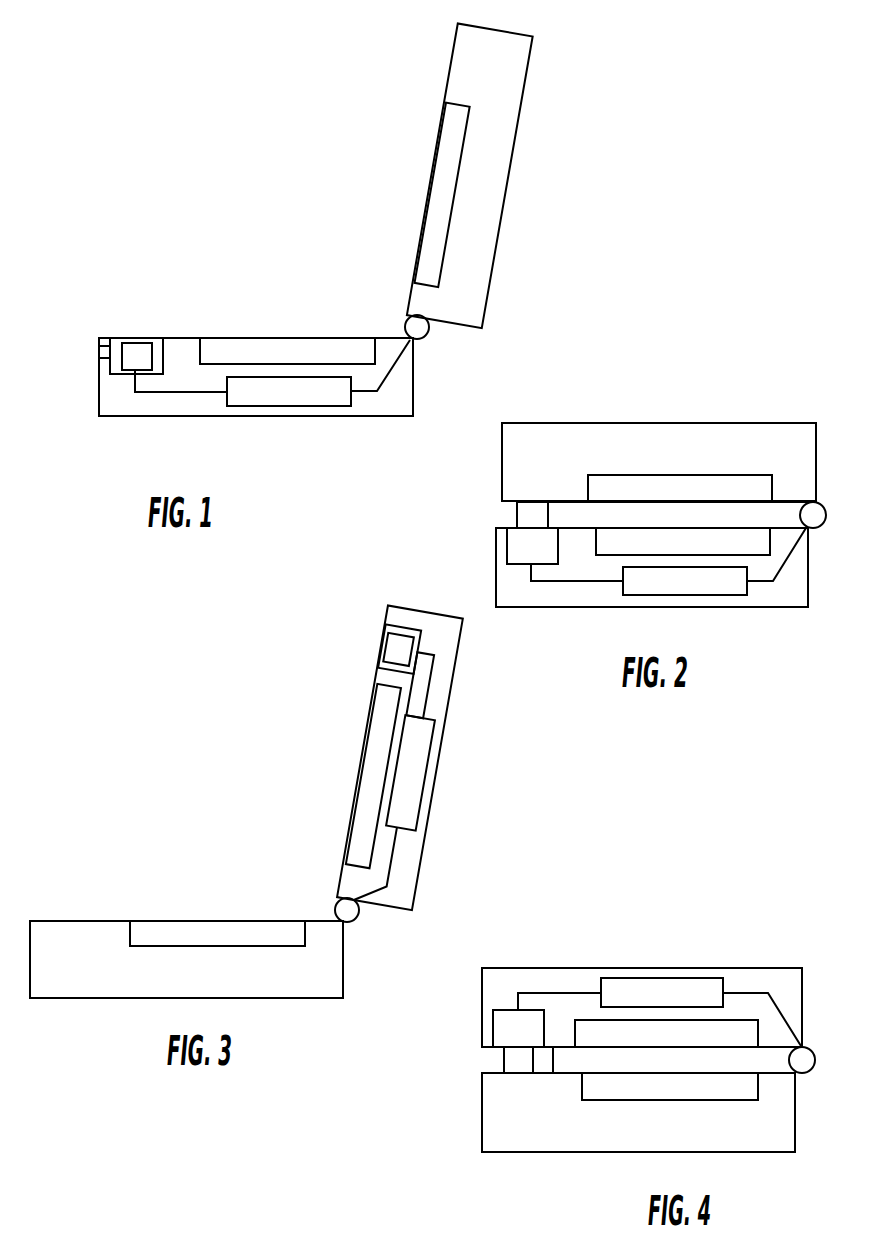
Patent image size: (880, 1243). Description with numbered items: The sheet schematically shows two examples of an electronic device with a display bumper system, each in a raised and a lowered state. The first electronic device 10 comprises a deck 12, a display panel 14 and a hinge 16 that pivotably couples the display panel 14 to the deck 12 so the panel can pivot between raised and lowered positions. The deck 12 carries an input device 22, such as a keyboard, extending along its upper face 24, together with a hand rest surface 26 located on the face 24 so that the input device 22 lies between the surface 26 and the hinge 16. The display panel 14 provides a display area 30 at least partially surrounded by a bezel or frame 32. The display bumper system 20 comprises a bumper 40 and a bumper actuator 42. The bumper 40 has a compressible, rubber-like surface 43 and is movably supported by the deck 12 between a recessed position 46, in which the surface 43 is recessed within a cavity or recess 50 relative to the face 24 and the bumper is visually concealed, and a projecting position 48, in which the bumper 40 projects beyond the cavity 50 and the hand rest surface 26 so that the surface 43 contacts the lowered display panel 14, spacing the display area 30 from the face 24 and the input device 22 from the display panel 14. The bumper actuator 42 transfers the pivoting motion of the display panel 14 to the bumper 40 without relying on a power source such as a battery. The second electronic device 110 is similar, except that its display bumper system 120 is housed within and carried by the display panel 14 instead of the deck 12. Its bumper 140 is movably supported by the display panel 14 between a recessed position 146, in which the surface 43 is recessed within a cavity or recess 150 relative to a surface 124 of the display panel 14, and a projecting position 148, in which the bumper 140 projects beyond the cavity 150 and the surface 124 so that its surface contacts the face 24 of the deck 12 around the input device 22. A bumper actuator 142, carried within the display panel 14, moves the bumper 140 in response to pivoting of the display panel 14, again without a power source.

In FIG. 1, the electronic device 10 is at (152, 192).
In FIG. 2, the electronic device 10 is at (525, 380).
In FIG. 1, the deck 12 is at (122, 420).
In FIG. 2, the deck 12 is at (778, 610).
In FIG. 3, the deck 12 is at (117, 1003).
In FIG. 4, the deck 12 is at (541, 1155).
In FIG. 1, the display panel 14 is at (513, 170).
In FIG. 2, the display panel 14 is at (597, 435).
In FIG. 3, the display panel 14 is at (448, 717).
In FIG. 4, the display panel 14 is at (720, 972).
In FIG. 1, the hinge 16 is at (429, 336).
In FIG. 2, the hinge 16 is at (827, 510).
In FIG. 3, the hinge 16 is at (358, 918).
In FIG. 4, the hinge 16 is at (817, 1056).
In FIG. 1, the display bumper system 20 is at (255, 409).
In FIG. 1, the input device 22 is at (258, 352).
In FIG. 2, the input device 22 is at (703, 532).
In FIG. 3, the input device 22 is at (258, 930).
In FIG. 4, the input device 22 is at (708, 1101).
In FIG. 1, the upper face of deck 24 is at (182, 338).
In FIG. 2, the upper face of deck 24 is at (582, 529).
In FIG. 3, the upper face of deck 24 is at (90, 920).
In FIG. 4, the upper face of deck 24 is at (483, 1071).
In FIG. 1, the hand rest surface 26 is at (158, 338).
In FIG. 2, the hand rest surface 26 is at (572, 529).
In FIG. 1, the display area 30 is at (428, 167).
In FIG. 2, the display area 30 is at (633, 487).
In FIG. 3, the display area 30 is at (347, 837).
In FIG. 4, the display area 30 is at (628, 1028).
In FIG. 1, the bezel or frame 32 is at (448, 77).
In FIG. 2, the bezel or frame 32 is at (510, 500).
In FIG. 1, the bumper 40 is at (118, 358).
In FIG. 2, the bumper 40 is at (517, 515).
In FIG. 1, the bumper actuator 42 is at (143, 338).
In FIG. 2, the bumper actuator 42 is at (713, 596).
In FIG. 2, the surface 43 is at (541, 500).
In FIG. 3, the surface 43 is at (383, 645).
In FIG. 4, the surface 43 is at (508, 1074).
In FIG. 1, the recessed position 46 is at (90, 329).
In FIG. 2, the projecting position 48 is at (473, 517).
In FIG. 1, the cavity or recess 50 is at (105, 347).
In FIG. 2, the cavity or recess 50 is at (507, 537).
In FIG. 3, the electronic device 110 is at (120, 777).
In FIG. 3, the display bumper system 120 is at (434, 778).
In FIG. 4, the display bumper system 120 is at (685, 972).
In FIG. 3, the surface of display panel 124 is at (377, 680).
In FIG. 4, the surface of display panel 124 is at (552, 1055).
In FIG. 3, the bumper 140 is at (396, 628).
In FIG. 4, the bumper 140 is at (503, 1060).
In FIG. 3, the bumper actuator 142 is at (420, 818).
In FIG. 4, the bumper actuator 142 is at (620, 973).
In FIG. 3, the recessed position 146 is at (408, 598).
In FIG. 4, the projecting position 148 is at (465, 1046).
In FIG. 3, the cavity or recess 150 is at (420, 627).
In FIG. 4, the cavity or recess 150 is at (493, 1012).